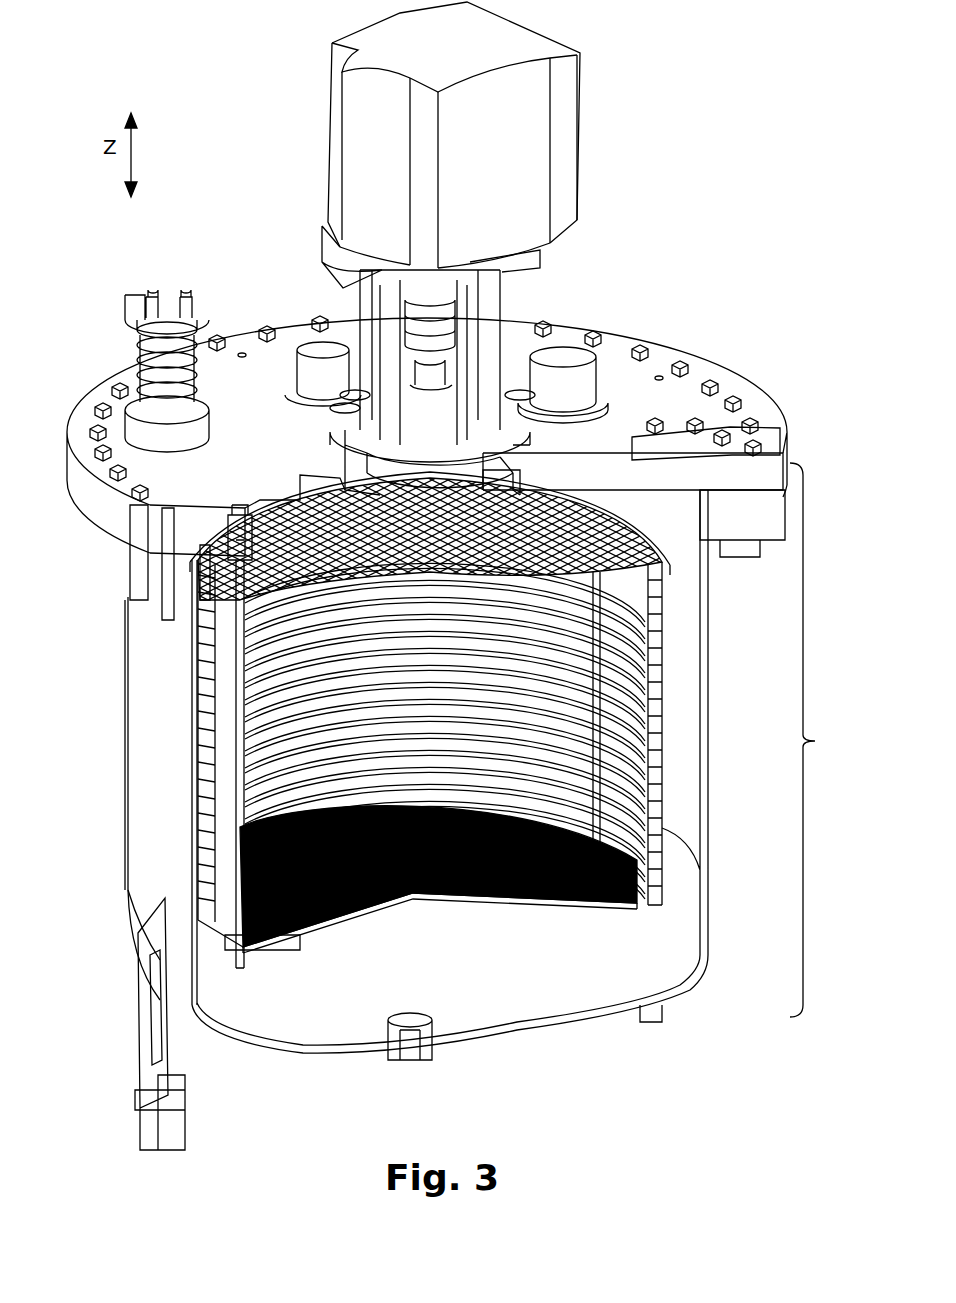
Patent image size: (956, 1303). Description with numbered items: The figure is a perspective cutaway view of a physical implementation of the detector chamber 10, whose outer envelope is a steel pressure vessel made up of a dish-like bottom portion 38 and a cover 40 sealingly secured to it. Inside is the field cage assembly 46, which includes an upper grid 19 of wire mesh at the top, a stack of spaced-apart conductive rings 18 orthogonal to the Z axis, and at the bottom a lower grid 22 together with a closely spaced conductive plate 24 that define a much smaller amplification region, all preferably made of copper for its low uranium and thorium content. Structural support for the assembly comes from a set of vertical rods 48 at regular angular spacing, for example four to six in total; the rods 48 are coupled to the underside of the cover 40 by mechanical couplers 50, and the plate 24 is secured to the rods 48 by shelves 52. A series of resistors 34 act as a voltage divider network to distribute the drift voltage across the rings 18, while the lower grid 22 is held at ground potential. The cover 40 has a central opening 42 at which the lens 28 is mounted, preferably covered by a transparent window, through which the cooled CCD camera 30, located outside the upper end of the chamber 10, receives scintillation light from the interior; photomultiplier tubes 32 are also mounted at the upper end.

The detector chamber 10 is at (820, 740).
The conductive rings 18 is at (200, 660).
The upper grid 19 is at (582, 500).
The lower grid 22 is at (395, 898).
The conductive plate 24 is at (345, 910).
The lens 28 is at (395, 350).
The CCD camera 30 is at (332, 152).
The photomultiplier tubes 32 is at (570, 388).
The resistors 34 is at (660, 695).
The bottom portion 38 is at (125, 745).
The cover 40 is at (130, 545).
The central opening 42 is at (460, 448).
The field cage assembly 46 is at (540, 925).
The vertical rods 48 is at (238, 968).
The mechanical couplers 50 is at (237, 540).
The shelves 52 is at (272, 950).